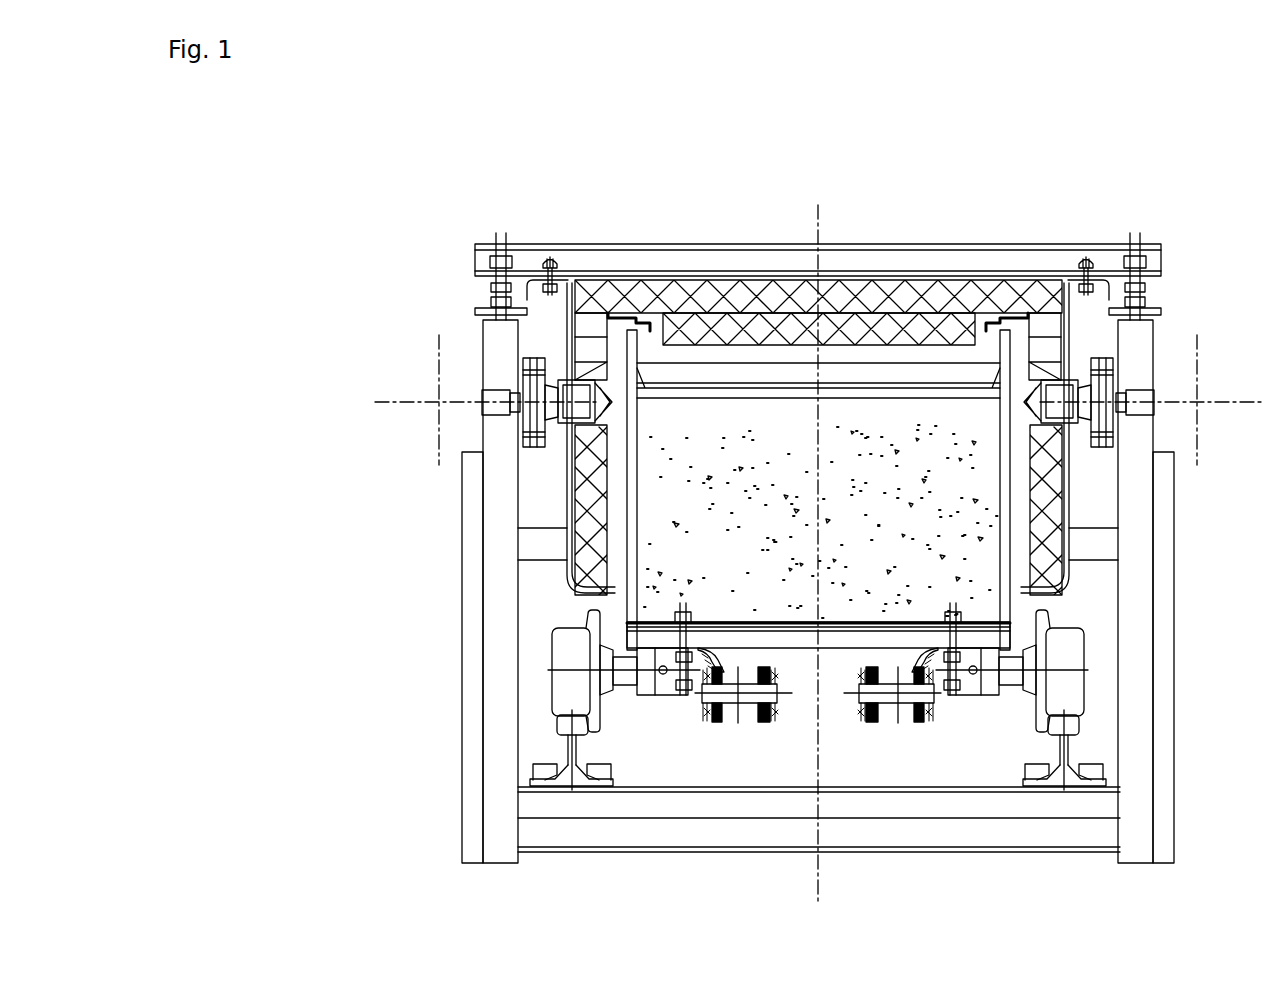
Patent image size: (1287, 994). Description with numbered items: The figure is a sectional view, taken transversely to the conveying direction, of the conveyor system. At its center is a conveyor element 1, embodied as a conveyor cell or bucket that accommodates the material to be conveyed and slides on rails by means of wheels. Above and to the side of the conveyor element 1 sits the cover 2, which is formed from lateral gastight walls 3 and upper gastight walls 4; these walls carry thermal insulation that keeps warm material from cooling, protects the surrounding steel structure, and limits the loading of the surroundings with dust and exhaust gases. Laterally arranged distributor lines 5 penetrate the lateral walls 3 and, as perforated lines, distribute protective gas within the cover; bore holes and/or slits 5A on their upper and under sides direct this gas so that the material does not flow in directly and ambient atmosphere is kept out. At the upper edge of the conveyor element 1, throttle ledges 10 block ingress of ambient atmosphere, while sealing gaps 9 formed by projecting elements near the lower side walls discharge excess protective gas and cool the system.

The conveyor element 1 is at (838, 642).
The cover 2 is at (884, 234).
The lateral gastight wall 3 is at (1053, 478).
The upper gastight wall 4 is at (760, 297).
The distributor line 5 is at (467, 402).
The bore holes and/or slits 5A is at (590, 402).
The sealing gap 9 is at (1022, 598).
The throttle ledge 10 is at (633, 322).